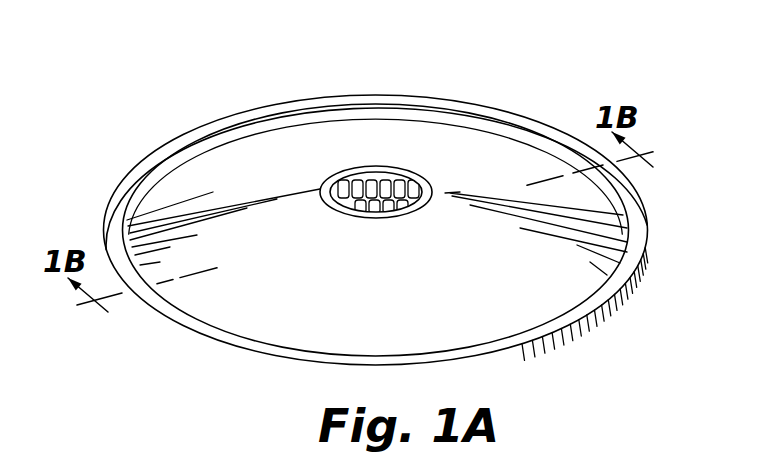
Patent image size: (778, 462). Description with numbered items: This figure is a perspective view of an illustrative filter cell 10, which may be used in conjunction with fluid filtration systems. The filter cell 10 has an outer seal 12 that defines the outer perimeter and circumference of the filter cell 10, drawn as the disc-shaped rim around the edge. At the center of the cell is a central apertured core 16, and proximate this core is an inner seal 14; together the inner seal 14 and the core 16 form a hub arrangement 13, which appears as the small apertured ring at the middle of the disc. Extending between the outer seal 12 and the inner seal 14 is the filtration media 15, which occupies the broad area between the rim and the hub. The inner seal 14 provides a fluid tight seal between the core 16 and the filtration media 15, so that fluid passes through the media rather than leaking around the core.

The filter cell 10 is at (407, 217).
The outer seal 12 is at (637, 227).
The hub arrangement 13 is at (403, 167).
The inner seal 14 is at (349, 180).
The filtration media 15 is at (240, 316).
The central apertured core 16 is at (349, 183).